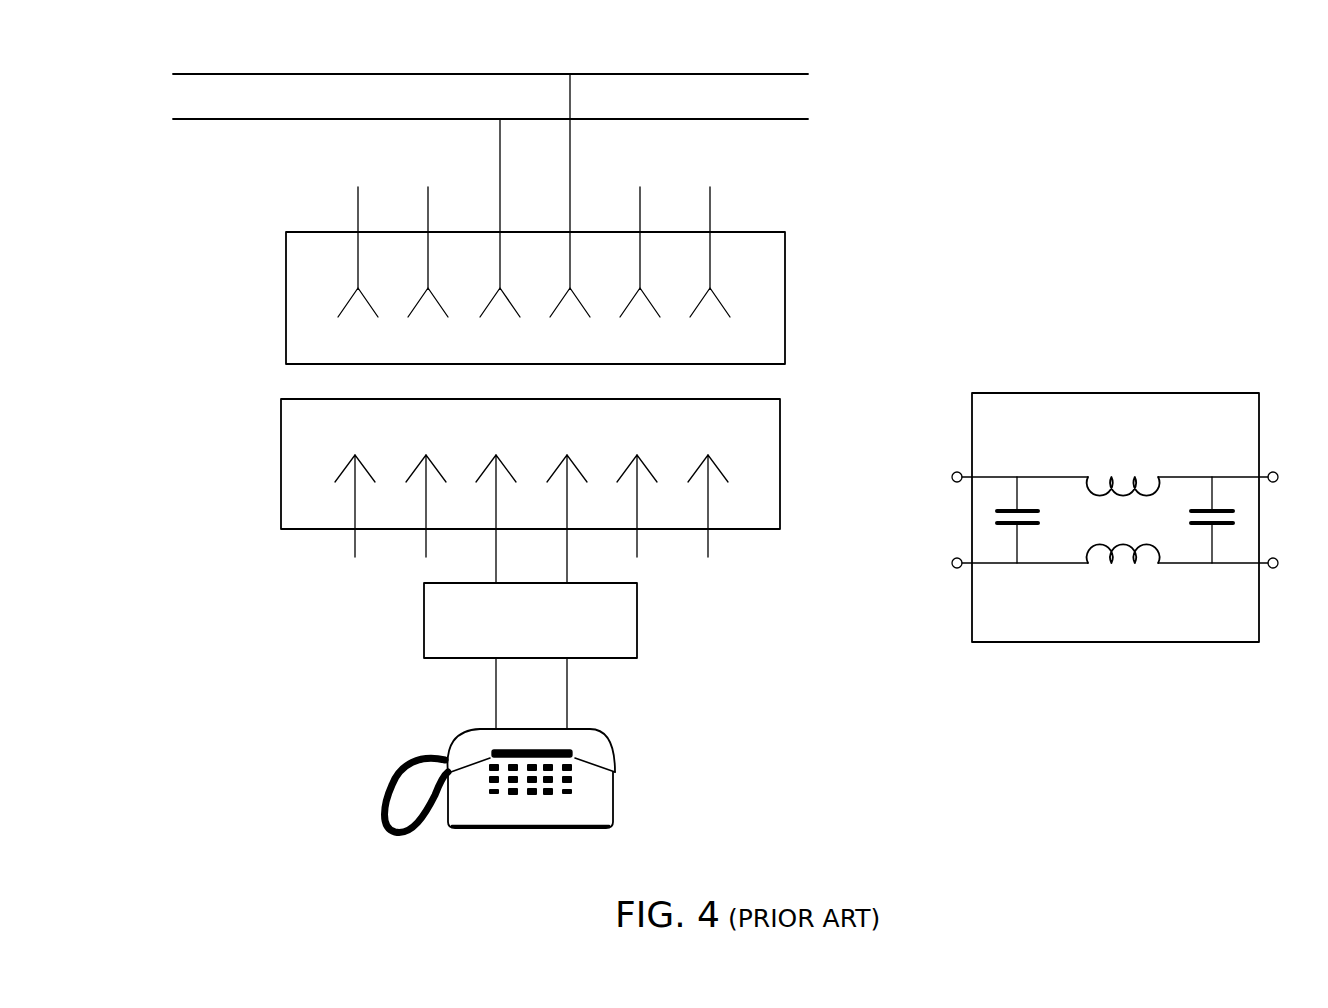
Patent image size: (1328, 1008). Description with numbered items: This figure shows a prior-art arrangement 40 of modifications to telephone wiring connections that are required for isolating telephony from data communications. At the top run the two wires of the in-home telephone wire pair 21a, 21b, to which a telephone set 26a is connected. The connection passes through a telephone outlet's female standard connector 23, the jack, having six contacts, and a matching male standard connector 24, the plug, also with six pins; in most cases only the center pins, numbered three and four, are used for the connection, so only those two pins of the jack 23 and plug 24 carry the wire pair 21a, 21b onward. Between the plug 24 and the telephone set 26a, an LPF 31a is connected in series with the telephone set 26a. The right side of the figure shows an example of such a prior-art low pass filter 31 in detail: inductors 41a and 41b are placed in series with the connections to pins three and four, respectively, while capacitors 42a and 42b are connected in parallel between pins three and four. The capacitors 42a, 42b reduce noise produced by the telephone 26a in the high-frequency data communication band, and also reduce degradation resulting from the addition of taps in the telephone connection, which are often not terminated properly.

The wire pair 21a is at (738, 74).
The wire pair 21b is at (738, 119).
The female RJ-11 connector 23 is at (286, 298).
The male RJ-11 connector 24 is at (281, 463).
The LPF 31a is at (424, 624).
The telephone set 26a is at (614, 798).
The prior art telephone line filter arrangement 40 is at (985, 221).
The low pass filter 31 is at (1116, 500).
The inductor 41a is at (1131, 477).
The inductor 41b is at (1136, 565).
The capacitor 42a is at (1034, 521).
The capacitor 42b is at (1198, 521).